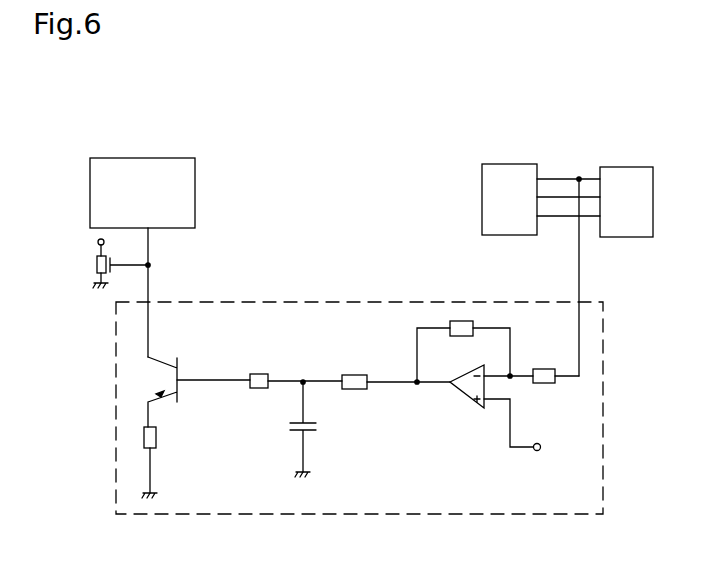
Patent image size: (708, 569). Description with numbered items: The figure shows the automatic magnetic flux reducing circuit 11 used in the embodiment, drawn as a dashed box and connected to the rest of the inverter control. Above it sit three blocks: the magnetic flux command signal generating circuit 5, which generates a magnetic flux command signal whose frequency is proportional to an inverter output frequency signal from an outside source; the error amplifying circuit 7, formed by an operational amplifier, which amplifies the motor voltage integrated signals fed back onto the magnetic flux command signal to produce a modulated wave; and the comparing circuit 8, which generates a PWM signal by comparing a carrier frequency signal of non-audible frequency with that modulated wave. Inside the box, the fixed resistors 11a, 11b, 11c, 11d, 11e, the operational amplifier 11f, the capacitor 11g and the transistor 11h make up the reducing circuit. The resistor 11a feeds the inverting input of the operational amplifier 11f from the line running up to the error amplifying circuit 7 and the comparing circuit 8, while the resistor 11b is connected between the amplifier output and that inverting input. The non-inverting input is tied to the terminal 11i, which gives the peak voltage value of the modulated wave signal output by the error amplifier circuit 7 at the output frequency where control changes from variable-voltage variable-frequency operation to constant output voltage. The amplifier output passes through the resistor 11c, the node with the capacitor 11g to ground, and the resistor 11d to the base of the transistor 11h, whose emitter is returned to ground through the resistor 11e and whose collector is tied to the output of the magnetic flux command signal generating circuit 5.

The magnetic flux command signal generating circuit 5 is at (147, 157).
The error amplifying circuit 7 is at (510, 163).
The comparing circuit 8 is at (627, 165).
The automatic magnetic flux reducing circuit 11 is at (372, 304).
The fixed resistor 11a is at (539, 338).
The fixed resistor 11b is at (455, 336).
The fixed resistor 11c is at (355, 376).
The fixed resistor 11d is at (263, 373).
The fixed resistor 11e is at (156, 438).
The operational amplifier 11f is at (463, 403).
The capacitor 11g is at (316, 426).
The transistor 11h is at (167, 357).
The terminal 11i is at (542, 444).